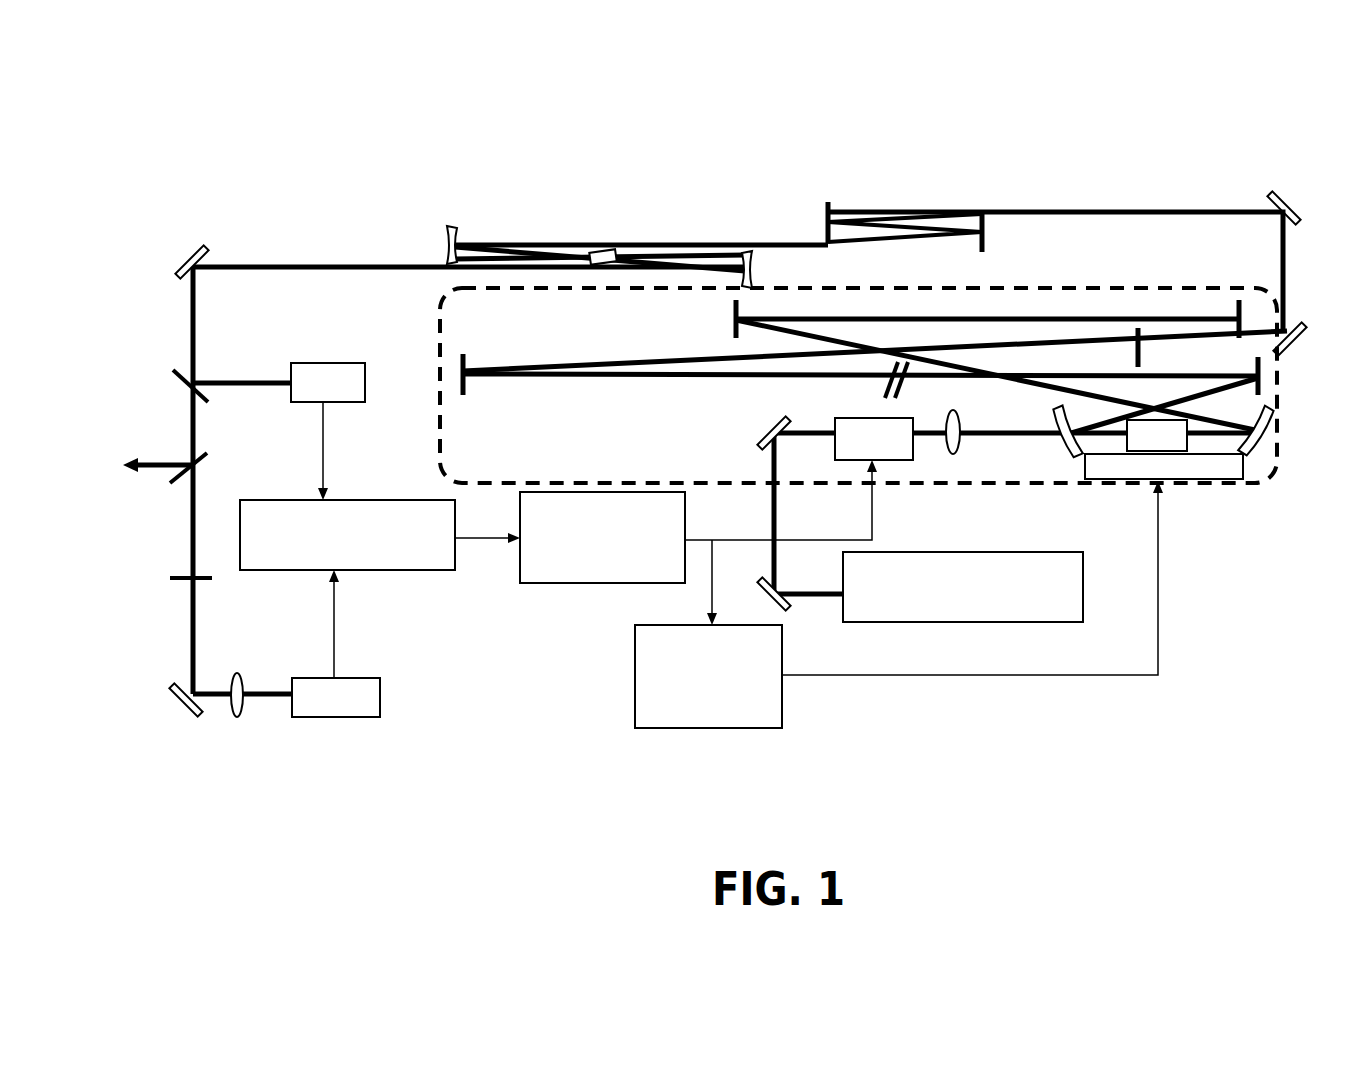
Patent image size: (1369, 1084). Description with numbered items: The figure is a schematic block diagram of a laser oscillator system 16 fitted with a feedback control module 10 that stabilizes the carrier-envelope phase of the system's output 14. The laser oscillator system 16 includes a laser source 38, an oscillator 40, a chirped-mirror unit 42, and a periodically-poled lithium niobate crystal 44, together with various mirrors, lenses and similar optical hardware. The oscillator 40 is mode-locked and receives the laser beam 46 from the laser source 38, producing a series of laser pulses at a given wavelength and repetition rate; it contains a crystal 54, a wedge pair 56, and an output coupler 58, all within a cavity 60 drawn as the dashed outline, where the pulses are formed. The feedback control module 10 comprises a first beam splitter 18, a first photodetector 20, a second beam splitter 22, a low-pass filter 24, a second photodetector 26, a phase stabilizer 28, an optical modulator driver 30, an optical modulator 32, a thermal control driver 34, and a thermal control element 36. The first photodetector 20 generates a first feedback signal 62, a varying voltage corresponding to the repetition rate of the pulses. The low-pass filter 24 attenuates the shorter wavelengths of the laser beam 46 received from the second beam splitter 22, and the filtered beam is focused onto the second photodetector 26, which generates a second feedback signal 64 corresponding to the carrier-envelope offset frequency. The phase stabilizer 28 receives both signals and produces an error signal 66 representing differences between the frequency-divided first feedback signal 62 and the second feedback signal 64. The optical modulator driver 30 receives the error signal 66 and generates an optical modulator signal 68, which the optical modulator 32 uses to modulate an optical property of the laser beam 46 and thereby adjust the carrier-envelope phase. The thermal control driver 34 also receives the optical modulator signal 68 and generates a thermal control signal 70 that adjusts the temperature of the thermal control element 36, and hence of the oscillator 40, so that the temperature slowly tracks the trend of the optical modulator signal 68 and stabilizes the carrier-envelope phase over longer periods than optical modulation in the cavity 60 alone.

The feedback control module 10 is at (443, 757).
The output 14 is at (162, 460).
The laser oscillator system 16 is at (888, 153).
The first beam splitter 18 is at (176, 358).
The first photodetector 20 is at (335, 363).
The second beam splitter 22 is at (212, 467).
The low-pass filter 24 is at (168, 569).
The second photodetector 26 is at (365, 718).
The phase stabilizer 28 is at (358, 498).
The optical modulator driver 30 is at (562, 583).
The optical modulator 32 is at (833, 441).
The thermal control driver 34 is at (684, 730).
The thermal control element 36 is at (1233, 479).
The laser source 38 is at (968, 553).
The oscillator 40 is at (1292, 388).
The chirped-mirror unit 42 is at (885, 208).
The periodically-poled lithium niobate (PPLN) crystal 44 is at (626, 253).
The laser beam 46 is at (272, 260).
The crystal 54 is at (1188, 440).
The wedge pair 56 is at (919, 393).
The output coupler 58 is at (1160, 325).
The cavity 60 is at (443, 300).
The first feedback signal 62 is at (321, 438).
The second feedback signal 64 is at (330, 608).
The error signal 66 is at (462, 533).
The optical modulator signal 68 is at (718, 535).
The thermal control signal 70 is at (958, 678).